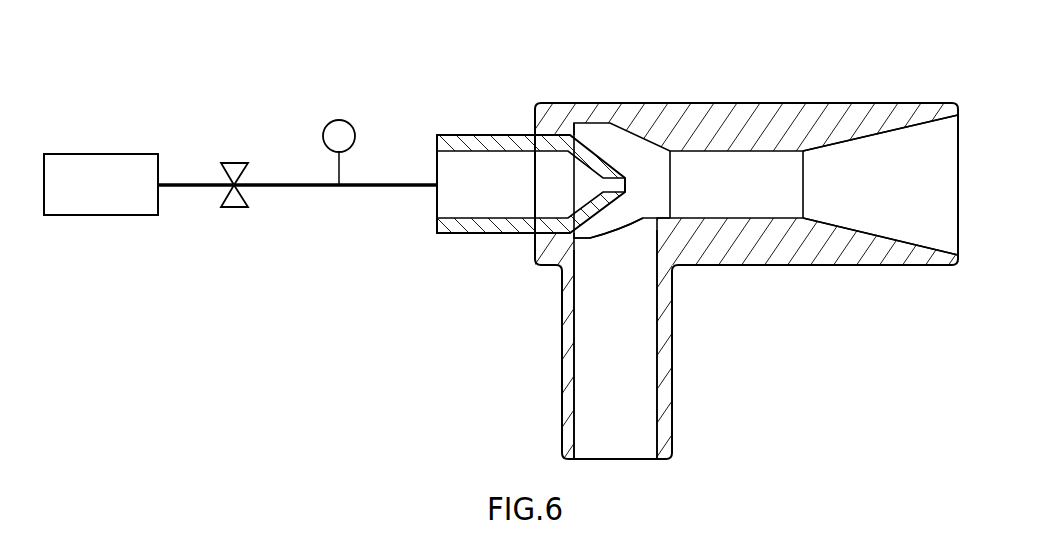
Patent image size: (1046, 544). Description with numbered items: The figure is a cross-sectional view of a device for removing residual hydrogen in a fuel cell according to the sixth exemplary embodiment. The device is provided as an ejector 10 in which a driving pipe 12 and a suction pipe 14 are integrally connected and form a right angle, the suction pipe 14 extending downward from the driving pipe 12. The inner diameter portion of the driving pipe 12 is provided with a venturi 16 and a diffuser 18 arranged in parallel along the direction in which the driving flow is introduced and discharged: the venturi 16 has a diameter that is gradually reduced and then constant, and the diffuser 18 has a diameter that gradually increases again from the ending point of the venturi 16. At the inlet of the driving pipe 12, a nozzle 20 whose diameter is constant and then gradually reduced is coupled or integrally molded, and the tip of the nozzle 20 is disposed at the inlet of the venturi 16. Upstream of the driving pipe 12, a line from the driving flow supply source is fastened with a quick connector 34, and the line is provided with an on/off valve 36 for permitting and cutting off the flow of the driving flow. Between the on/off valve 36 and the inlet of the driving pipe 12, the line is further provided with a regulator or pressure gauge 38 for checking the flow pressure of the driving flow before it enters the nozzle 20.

The ejector 10 is at (723, 62).
The driving pipe 12 is at (812, 118).
The suction pipe 14 is at (665, 385).
The venturi 16 is at (662, 198).
The diffuser 18 is at (880, 220).
The nozzle 20 is at (466, 225).
The quick connector 34 is at (97, 153).
The on/off valve 36 is at (238, 163).
The regulator or pressure gauge 38 is at (338, 120).